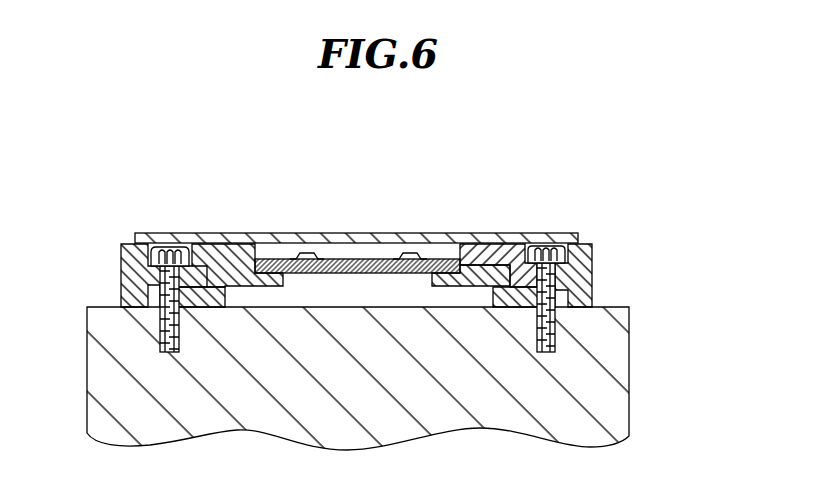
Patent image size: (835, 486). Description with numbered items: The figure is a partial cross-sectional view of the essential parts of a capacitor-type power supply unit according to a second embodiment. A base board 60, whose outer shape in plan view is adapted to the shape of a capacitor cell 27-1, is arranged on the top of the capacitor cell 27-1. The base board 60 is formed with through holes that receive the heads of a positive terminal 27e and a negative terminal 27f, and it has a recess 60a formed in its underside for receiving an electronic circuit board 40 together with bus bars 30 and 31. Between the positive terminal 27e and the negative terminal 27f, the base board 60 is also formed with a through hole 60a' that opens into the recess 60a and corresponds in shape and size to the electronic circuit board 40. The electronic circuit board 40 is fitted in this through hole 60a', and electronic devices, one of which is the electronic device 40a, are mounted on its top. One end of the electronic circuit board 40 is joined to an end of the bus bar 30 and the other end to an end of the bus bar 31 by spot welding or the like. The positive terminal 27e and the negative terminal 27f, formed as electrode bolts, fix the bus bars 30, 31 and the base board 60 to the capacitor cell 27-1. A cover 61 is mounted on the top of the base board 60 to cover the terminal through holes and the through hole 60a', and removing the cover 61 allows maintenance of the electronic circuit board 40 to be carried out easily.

The capacitor cell 27-1 is at (617, 371).
The positive terminal 27e is at (160, 283).
The negative terminal 27f is at (556, 283).
The bus bar 30 is at (218, 272).
The bus bar 31 is at (487, 268).
The electronic circuit board 40 is at (447, 262).
The electronic device 40a is at (308, 258).
The base board 60 is at (594, 253).
The recess 60a is at (442, 208).
The through hole 60a' is at (378, 210).
The cover 61 is at (257, 233).